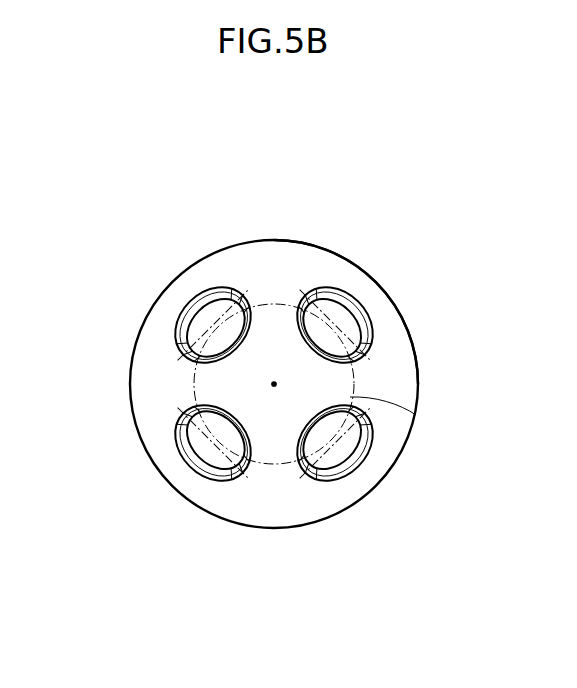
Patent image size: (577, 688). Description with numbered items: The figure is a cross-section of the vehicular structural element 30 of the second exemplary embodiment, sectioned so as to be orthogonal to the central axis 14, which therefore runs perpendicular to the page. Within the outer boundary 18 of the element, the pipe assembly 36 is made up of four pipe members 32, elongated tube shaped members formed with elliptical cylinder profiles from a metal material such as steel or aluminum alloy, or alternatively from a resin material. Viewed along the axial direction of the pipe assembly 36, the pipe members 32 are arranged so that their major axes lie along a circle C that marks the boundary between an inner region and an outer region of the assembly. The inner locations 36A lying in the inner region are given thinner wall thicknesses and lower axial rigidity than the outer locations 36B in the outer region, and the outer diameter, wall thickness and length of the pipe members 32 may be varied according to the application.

The vehicular structural element 30 is at (458, 273).
The outer wall 18 is at (243, 239).
The pipe assembly 36 is at (382, 287).
The central axis 14 is at (277, 384).
The circle C is at (417, 416).
The pipe member 32 is at (194, 292).
The outer location 36B is at (221, 289).
The inner location 36A is at (306, 326).